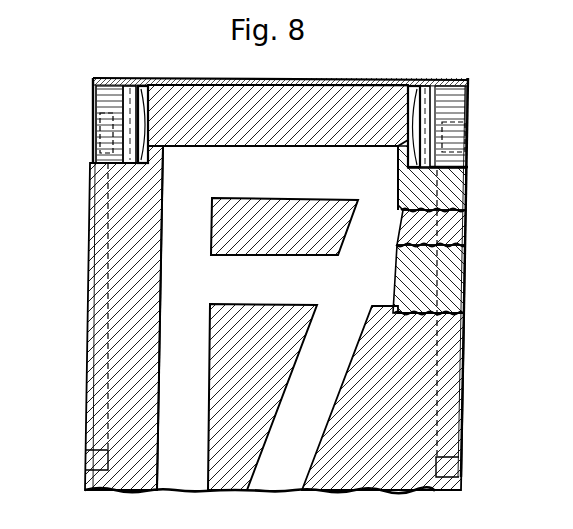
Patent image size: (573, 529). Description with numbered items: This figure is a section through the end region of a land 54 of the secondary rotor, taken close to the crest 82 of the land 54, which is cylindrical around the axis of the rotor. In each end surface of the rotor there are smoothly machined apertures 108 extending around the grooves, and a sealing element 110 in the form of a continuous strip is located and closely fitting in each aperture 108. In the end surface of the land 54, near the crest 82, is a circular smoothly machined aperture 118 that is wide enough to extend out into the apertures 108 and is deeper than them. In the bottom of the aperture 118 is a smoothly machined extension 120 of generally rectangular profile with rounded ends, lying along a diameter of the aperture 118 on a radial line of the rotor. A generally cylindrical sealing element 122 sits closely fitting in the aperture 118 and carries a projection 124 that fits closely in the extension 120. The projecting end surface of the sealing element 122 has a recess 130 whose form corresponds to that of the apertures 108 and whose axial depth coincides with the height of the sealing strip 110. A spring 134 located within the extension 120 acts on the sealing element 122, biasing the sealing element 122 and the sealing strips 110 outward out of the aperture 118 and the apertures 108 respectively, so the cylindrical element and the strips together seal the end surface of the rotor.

The land 54 is at (352, 105).
The crest 82 is at (318, 78).
The aperture 108 is at (101, 263).
The sealing element 110 is at (89, 212).
The aperture 118 is at (127, 73).
The extension 120 is at (148, 92).
The sealing element 122 is at (97, 93).
The projection 124 is at (133, 92).
The recess 130 is at (98, 146).
The spring 134 is at (143, 110).